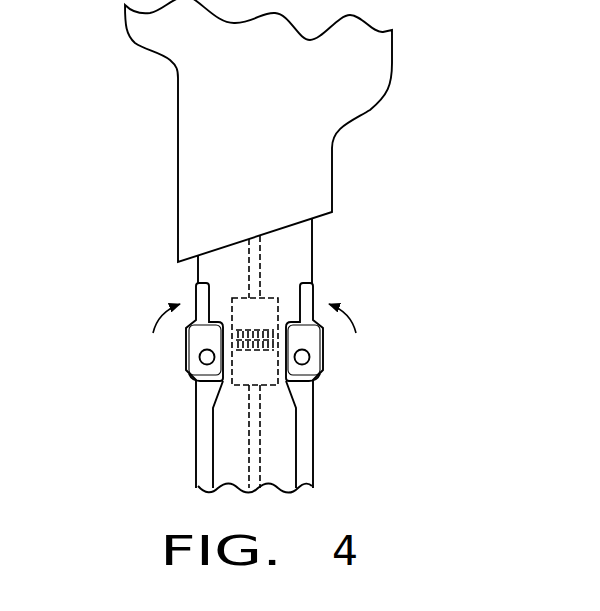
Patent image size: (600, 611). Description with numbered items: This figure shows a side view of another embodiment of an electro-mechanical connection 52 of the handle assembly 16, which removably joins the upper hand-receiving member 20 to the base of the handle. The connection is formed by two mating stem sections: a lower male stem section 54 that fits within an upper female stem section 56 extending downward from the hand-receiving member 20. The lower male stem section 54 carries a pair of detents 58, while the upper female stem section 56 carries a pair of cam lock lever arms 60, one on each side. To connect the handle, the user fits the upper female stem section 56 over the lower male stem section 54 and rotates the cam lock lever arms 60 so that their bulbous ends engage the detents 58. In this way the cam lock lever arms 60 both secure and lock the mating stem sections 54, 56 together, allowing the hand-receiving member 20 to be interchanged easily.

The hand-receiving member 20 is at (387, 62).
The handle assembly 16 is at (392, 174).
The upper female stem section 56 is at (307, 241).
The electro-mechanical connection 52 is at (377, 318).
The cam lock lever arms 60 is at (190, 352).
The detents 58 is at (196, 377).
The lower male stem section 54 is at (307, 463).